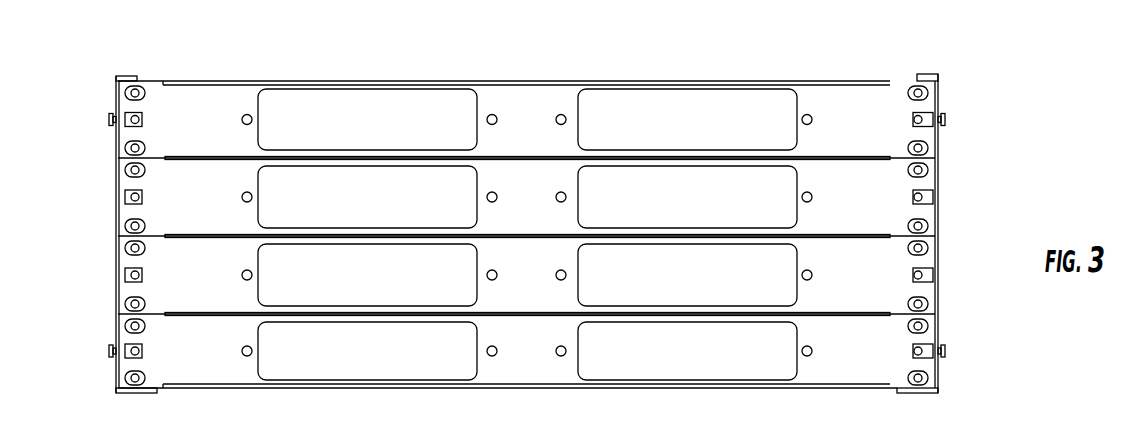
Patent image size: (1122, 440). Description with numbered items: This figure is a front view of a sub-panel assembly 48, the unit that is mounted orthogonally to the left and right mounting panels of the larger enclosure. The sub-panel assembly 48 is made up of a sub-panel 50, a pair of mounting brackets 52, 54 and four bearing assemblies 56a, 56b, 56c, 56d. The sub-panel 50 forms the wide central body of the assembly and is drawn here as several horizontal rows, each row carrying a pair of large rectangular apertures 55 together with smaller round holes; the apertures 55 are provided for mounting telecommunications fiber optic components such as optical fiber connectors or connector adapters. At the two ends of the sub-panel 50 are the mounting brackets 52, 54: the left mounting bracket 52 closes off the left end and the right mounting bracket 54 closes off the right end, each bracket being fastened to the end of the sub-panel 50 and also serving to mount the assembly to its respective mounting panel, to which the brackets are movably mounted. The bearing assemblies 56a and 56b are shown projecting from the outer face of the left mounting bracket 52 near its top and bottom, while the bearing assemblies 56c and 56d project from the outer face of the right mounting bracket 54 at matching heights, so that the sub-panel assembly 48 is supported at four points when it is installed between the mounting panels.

The sub-panel assembly 48 is at (984, 163).
The sub-panel 50 is at (553, 81).
The left mounting bracket 52 is at (128, 395).
The right mounting bracket 54 is at (920, 393).
The apertures 55 is at (798, 103).
The bearing assembly 56a is at (108, 120).
The bearing assembly 56b is at (107, 352).
The bearing assembly 56c is at (948, 117).
The bearing assembly 56d is at (947, 352).